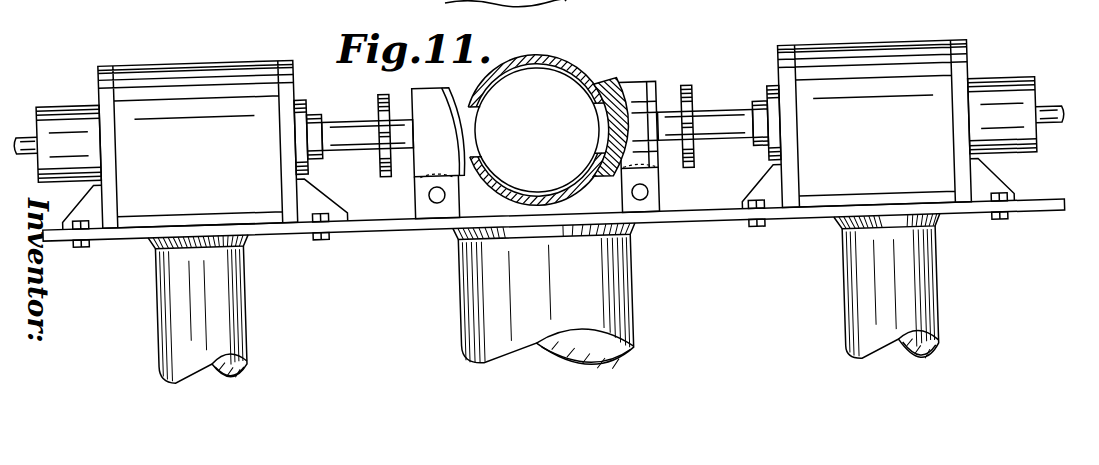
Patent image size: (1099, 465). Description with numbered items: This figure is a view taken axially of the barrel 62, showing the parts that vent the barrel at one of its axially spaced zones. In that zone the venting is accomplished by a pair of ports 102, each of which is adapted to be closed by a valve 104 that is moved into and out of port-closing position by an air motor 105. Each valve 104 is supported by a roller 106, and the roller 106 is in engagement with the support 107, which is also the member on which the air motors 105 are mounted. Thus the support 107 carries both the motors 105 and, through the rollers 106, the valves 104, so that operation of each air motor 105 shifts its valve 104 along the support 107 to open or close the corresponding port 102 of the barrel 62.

The air motor 105 is at (220, 53).
The valve 104 is at (435, 87).
The barrel 62 is at (599, 78).
The port 102 is at (603, 125).
The roller 106 is at (435, 213).
The support 107 is at (698, 223).